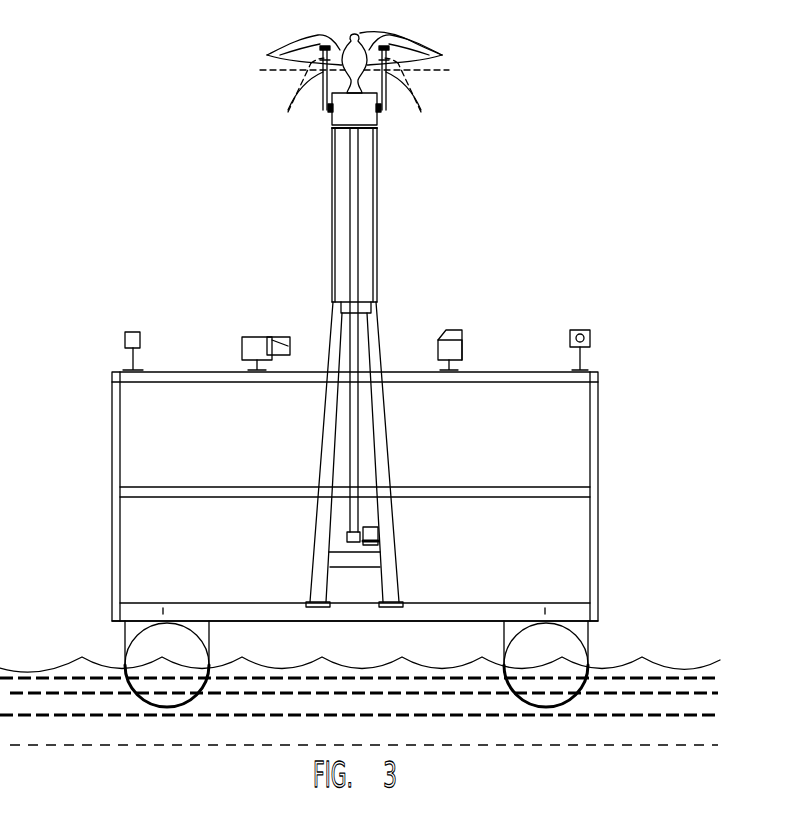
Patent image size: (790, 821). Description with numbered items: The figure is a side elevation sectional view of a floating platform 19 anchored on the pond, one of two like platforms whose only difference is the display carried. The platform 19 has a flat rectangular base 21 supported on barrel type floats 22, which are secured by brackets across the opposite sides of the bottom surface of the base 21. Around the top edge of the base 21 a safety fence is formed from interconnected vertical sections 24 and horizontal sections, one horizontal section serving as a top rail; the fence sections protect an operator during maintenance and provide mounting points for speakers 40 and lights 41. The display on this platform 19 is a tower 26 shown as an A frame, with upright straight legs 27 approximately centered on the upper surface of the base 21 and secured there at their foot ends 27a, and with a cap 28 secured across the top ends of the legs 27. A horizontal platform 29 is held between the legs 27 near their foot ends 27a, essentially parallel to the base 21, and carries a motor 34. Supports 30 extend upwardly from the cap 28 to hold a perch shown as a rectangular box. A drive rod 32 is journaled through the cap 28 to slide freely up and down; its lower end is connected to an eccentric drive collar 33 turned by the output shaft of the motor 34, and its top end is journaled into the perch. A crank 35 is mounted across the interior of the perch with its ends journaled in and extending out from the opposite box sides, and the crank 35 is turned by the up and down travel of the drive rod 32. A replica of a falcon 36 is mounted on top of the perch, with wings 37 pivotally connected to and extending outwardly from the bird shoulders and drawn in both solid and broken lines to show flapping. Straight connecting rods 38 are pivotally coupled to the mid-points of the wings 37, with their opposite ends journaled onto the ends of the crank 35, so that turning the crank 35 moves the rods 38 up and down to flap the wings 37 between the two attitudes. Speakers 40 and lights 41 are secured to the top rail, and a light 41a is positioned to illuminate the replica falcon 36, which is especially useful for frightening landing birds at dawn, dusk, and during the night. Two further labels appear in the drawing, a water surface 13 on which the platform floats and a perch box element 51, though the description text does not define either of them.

The body of water 13 is at (660, 673).
The floating platform 19 is at (568, 307).
The flat rectangular base 21 is at (477, 607).
The barrel type floats 22 is at (133, 653).
The vertical sections 24 is at (112, 410).
The tower 26 is at (392, 285).
The upright straight legs 27 is at (325, 320).
The foot ends 27a is at (307, 602).
The cap 28 is at (363, 297).
The horizontal platform 29 is at (365, 558).
The supports 30 is at (333, 155).
The drive rod 32 is at (350, 193).
The eccentric drive collar 33 is at (347, 536).
The motor 34 is at (378, 532).
The crank 35 is at (327, 108).
The replica of a falcon 36 is at (349, 37).
The wings 37 is at (330, 55).
The straight connecting rods 38 is at (340, 66).
The speakers 40 is at (242, 345).
The lights 41 is at (125, 338).
The light 41a is at (465, 343).
The head housing 51 is at (370, 117).